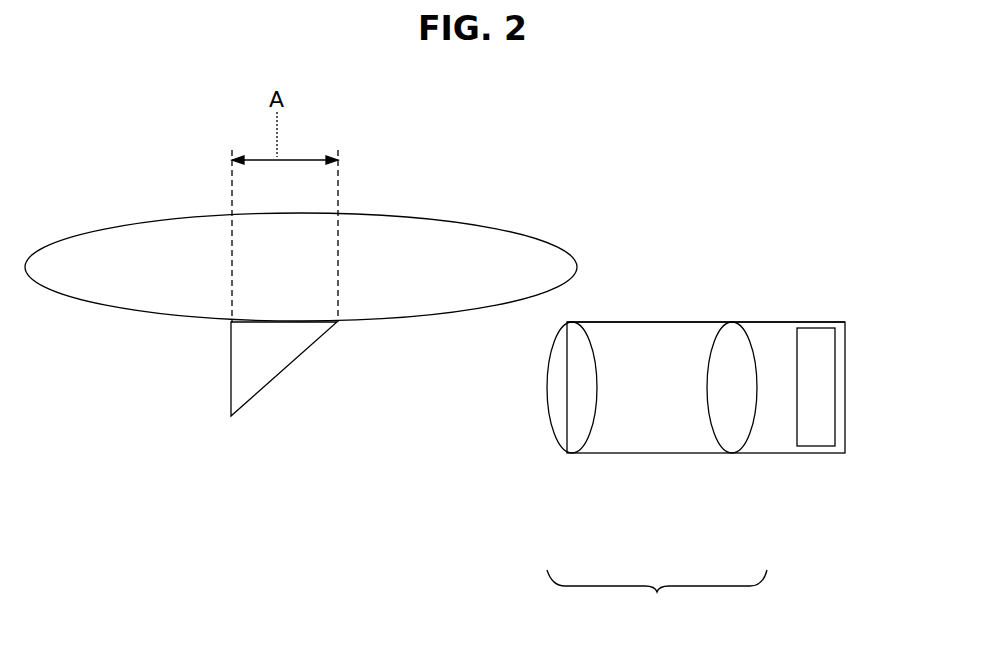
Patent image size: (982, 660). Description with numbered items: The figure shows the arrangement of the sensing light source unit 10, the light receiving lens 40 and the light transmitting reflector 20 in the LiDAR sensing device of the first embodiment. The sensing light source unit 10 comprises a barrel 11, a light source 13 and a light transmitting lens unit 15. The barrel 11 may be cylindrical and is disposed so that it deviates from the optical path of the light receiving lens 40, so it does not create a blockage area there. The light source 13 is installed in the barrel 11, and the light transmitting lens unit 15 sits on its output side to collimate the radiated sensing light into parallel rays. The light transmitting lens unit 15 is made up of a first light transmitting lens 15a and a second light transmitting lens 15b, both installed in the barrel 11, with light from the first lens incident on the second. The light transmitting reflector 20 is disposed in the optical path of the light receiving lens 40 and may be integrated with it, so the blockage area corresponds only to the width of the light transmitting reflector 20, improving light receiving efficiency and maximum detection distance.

The sensing light source unit 10 is at (781, 320).
The barrel 11 is at (662, 320).
The light source 13 is at (827, 362).
The light transmitting lens unit 15 is at (657, 601).
The first light transmitting lens 15a is at (729, 415).
The second light transmitting lens 15b is at (573, 418).
The light transmitting reflector 20 is at (228, 374).
The light receiving lens 40 is at (97, 231).